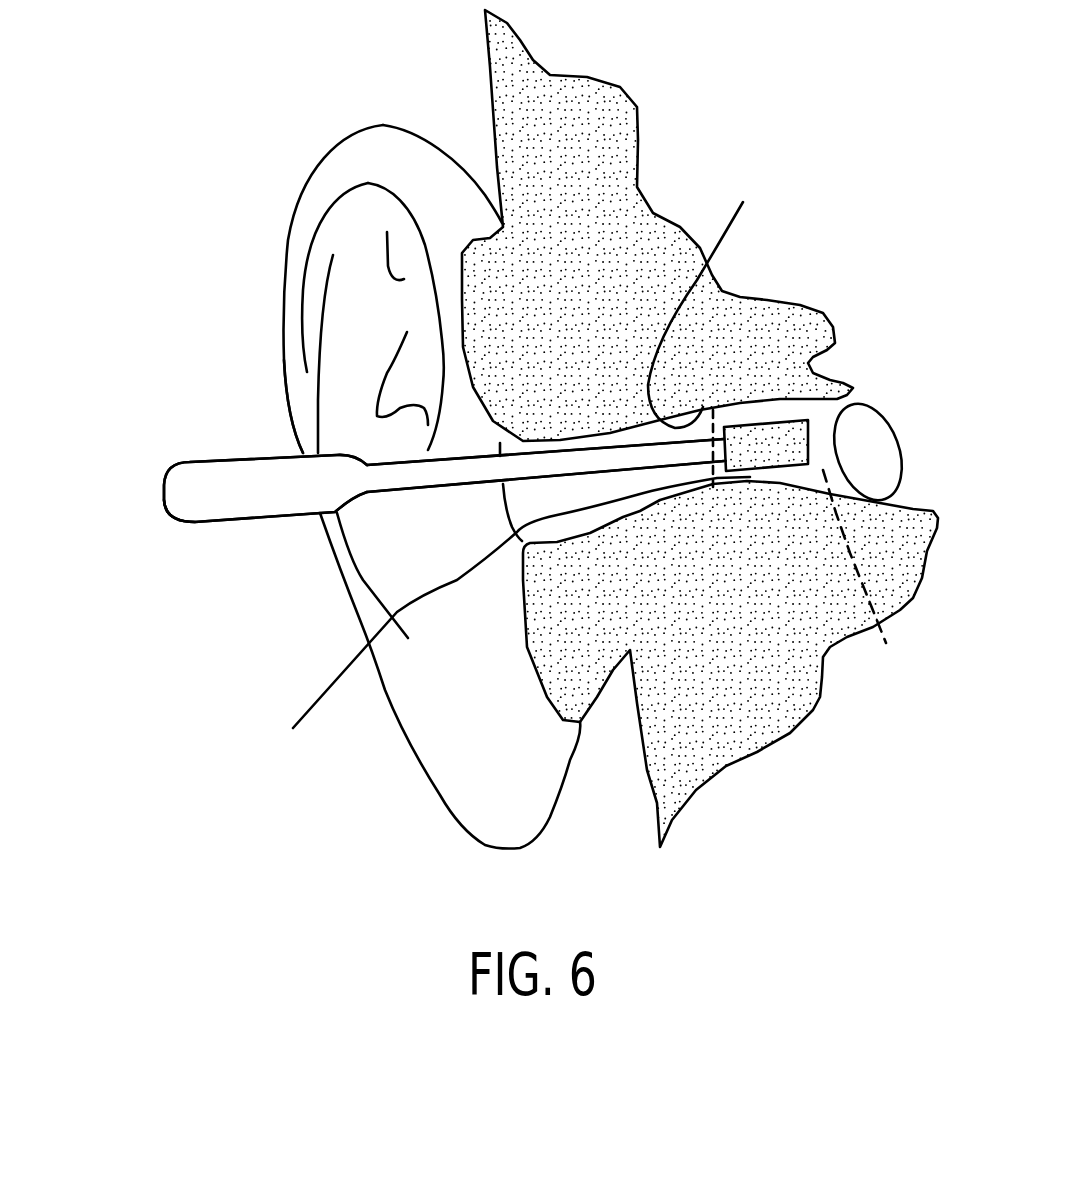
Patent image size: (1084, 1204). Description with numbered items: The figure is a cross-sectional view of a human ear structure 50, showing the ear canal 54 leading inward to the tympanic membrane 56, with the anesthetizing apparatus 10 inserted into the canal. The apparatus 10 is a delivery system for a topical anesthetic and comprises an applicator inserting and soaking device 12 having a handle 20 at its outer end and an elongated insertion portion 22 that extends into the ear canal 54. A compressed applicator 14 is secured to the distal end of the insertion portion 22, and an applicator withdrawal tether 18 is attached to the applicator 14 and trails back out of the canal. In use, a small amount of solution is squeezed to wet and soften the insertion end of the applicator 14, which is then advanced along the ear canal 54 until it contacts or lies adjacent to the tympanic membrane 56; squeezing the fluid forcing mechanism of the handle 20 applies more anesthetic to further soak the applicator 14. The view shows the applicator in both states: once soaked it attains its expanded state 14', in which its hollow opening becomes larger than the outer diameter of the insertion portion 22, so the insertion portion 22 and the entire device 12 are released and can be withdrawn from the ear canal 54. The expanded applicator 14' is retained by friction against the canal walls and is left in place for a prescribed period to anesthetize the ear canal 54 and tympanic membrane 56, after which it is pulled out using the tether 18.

The apparatus 10 is at (150, 480).
The applicator inserting and soaking device 12 is at (193, 526).
The applicator 14 is at (775, 353).
The expanded applicator 14' is at (865, 580).
The applicator withdrawal tether 18 is at (323, 695).
The handle 20 is at (228, 523).
The insertion portion 22 is at (440, 475).
The human ear structure 50 is at (278, 429).
The ear canal 54 is at (706, 294).
The tympanic membrane 56 is at (877, 438).